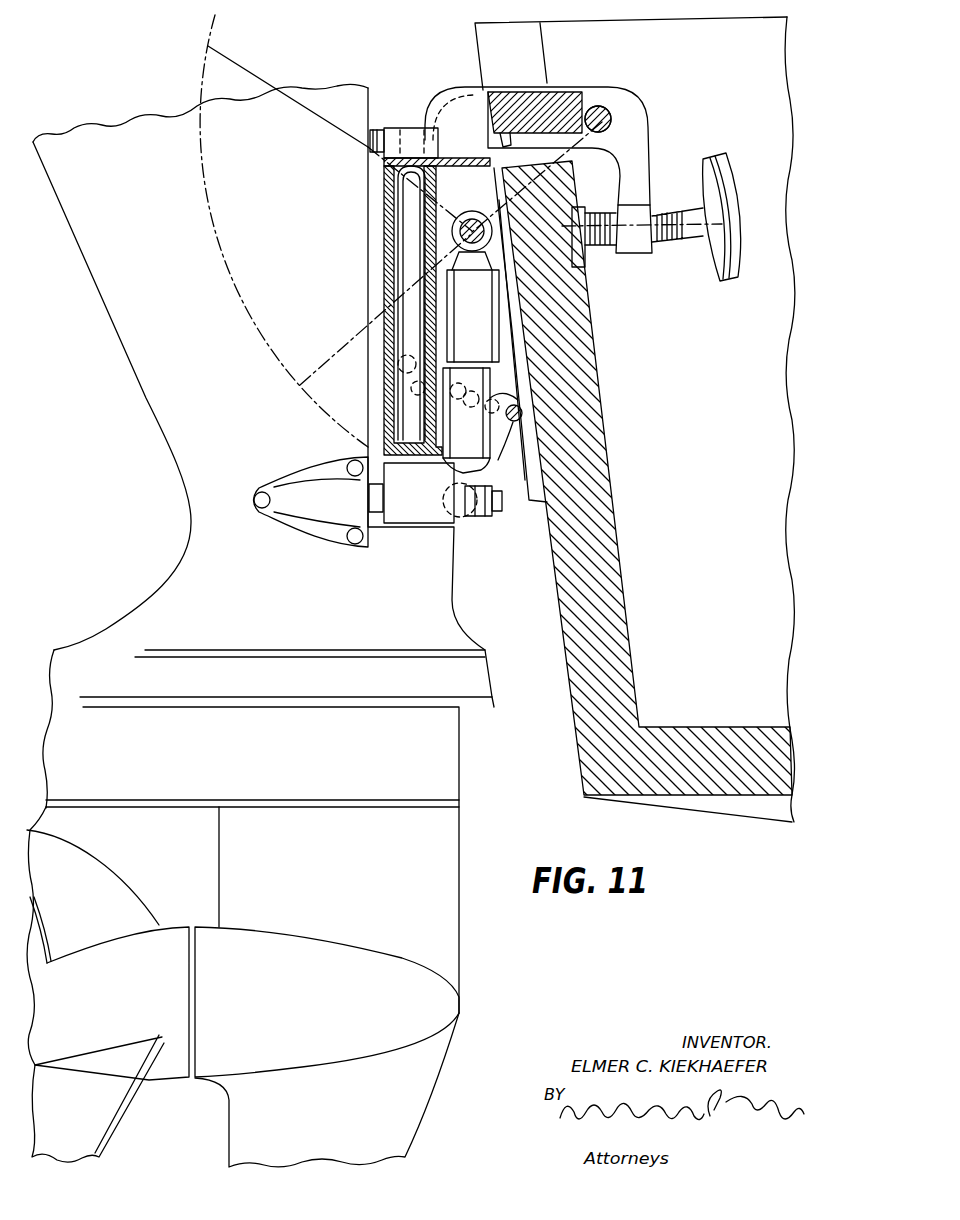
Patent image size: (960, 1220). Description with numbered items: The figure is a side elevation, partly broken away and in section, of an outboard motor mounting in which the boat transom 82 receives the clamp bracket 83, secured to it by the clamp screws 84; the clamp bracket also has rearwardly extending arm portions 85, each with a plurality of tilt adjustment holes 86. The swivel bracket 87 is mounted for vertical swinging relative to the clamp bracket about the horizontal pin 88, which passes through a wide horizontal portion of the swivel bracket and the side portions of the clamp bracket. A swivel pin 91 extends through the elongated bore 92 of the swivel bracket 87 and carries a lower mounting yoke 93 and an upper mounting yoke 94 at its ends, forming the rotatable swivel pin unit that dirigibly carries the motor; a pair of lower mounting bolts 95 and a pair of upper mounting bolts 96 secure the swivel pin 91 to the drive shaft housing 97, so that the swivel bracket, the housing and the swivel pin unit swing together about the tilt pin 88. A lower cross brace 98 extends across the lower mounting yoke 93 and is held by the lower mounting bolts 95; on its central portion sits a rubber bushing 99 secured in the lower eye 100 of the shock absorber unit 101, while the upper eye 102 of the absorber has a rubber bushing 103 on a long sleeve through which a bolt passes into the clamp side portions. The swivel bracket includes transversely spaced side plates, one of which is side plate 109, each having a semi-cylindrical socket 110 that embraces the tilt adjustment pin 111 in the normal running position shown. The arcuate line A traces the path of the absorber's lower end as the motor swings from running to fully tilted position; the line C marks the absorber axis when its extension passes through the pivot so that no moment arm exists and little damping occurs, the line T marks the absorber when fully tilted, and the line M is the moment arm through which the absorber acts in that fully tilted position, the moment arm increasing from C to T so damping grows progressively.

The transom 82 is at (622, 590).
The clamp bracket 83 is at (638, 148).
The clamp screws 84 is at (670, 233).
The arm portions 85 is at (380, 400).
The tilt adjustment holes 86 is at (395, 378).
The swivel bracket 87 is at (553, 95).
The horizontal pin 88 is at (608, 116).
The swivel pin 91 is at (394, 212).
The elongated bore 92 is at (384, 248).
The lower mounting yoke 93 is at (414, 520).
The upper mounting yoke 94 is at (408, 135).
The lower mounting bolts 95 is at (370, 497).
The upper mounting bolts 96 is at (370, 142).
The drive shaft housing 97 is at (190, 522).
The lower cross brace 98 is at (458, 499).
The rubber bushing 99 is at (462, 472).
The lower eye 100 is at (470, 518).
The shock absorber unit 101 is at (507, 345).
The upper eye 102 is at (481, 210).
The rubber bushing 103 is at (470, 258).
The side plate 109 is at (522, 398).
The semi-cylindrical socket 110 is at (500, 426).
The tilt adjustment pin 111 is at (521, 413).
The fully tilted position line T is at (243, 63).
The arcuate line A is at (228, 283).
The no-moment-arm position line C is at (338, 365).
The moment arm line M is at (562, 160).